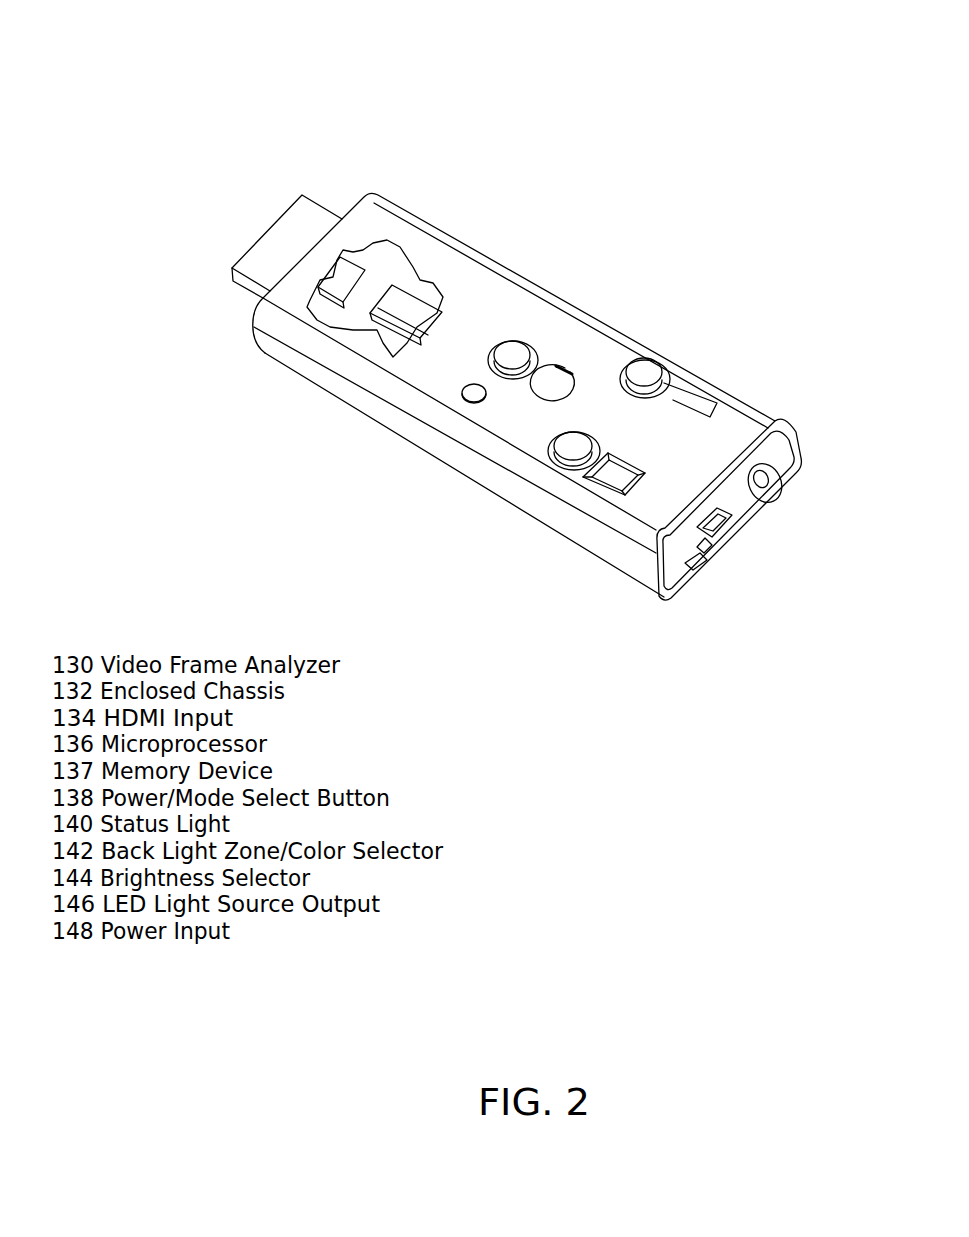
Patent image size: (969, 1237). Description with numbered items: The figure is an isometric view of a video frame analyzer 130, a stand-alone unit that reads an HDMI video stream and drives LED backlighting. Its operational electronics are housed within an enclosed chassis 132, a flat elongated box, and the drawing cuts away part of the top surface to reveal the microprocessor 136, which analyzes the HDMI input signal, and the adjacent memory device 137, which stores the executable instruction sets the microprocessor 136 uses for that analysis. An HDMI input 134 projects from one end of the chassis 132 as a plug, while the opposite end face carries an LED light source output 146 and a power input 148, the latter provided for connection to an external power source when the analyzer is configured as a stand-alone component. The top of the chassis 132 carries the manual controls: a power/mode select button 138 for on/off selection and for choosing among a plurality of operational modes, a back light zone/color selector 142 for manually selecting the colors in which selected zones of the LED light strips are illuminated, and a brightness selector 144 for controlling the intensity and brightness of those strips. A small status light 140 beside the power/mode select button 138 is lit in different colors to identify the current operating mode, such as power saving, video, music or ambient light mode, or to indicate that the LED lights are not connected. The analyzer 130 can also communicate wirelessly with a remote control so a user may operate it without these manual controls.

The video frame analyzer 130 is at (356, 96).
The enclosed chassis 132 is at (506, 262).
The HDMI input 134 is at (283, 204).
The microprocessor 136 is at (412, 283).
The memory device 137 is at (321, 296).
The power/mode select button 138 is at (487, 362).
The status light 140 is at (476, 405).
The back light zone/color selector 142 is at (572, 468).
The brightness selector 144 is at (633, 359).
The LED light source output 146 is at (719, 553).
The power input 148 is at (775, 493).